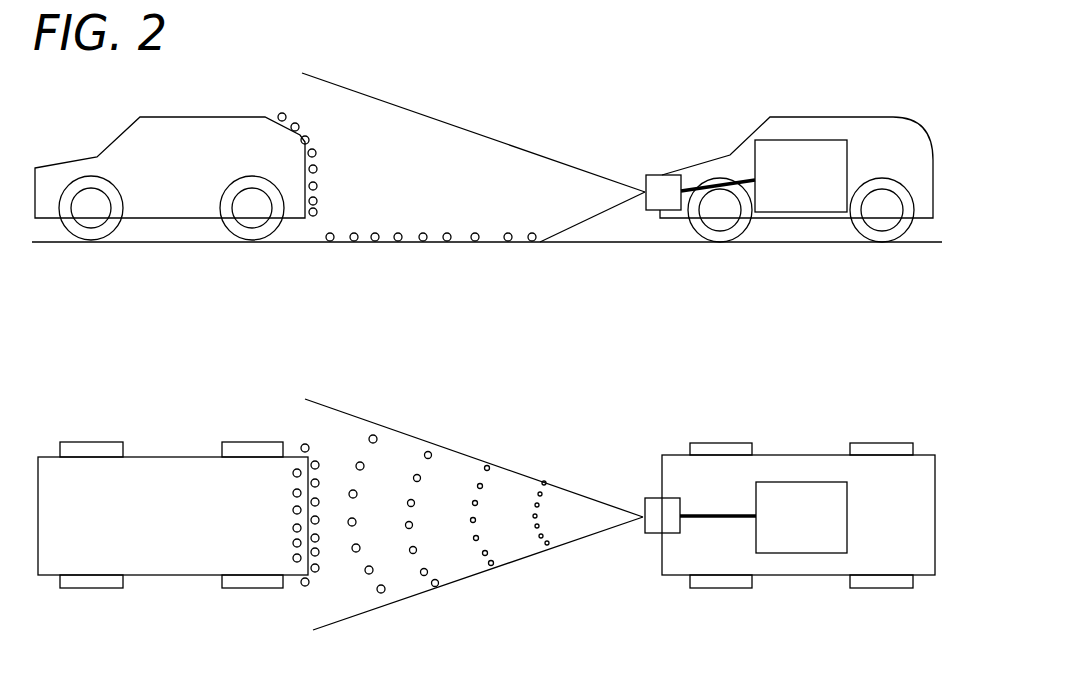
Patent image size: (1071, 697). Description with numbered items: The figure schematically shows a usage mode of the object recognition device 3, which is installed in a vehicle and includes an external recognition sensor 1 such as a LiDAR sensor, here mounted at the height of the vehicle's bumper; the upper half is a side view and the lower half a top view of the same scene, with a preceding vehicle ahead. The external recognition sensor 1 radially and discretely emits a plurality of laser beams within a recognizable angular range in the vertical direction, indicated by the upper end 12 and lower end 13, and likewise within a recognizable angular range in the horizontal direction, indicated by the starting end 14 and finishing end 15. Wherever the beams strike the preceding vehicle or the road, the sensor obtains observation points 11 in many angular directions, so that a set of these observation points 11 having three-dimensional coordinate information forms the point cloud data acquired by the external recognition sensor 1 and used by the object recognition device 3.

The external recognition sensor 1 is at (662, 175).
The object recognition device 3 is at (853, 177).
The observation points 11 is at (314, 153).
The upper end of the recognizable angular range 12 is at (307, 72).
The lower end of the recognizable angular range 13 is at (592, 218).
The starting end of the recognizable angular range 14 is at (365, 613).
The finishing end of the recognizable angular range 15 is at (337, 410).